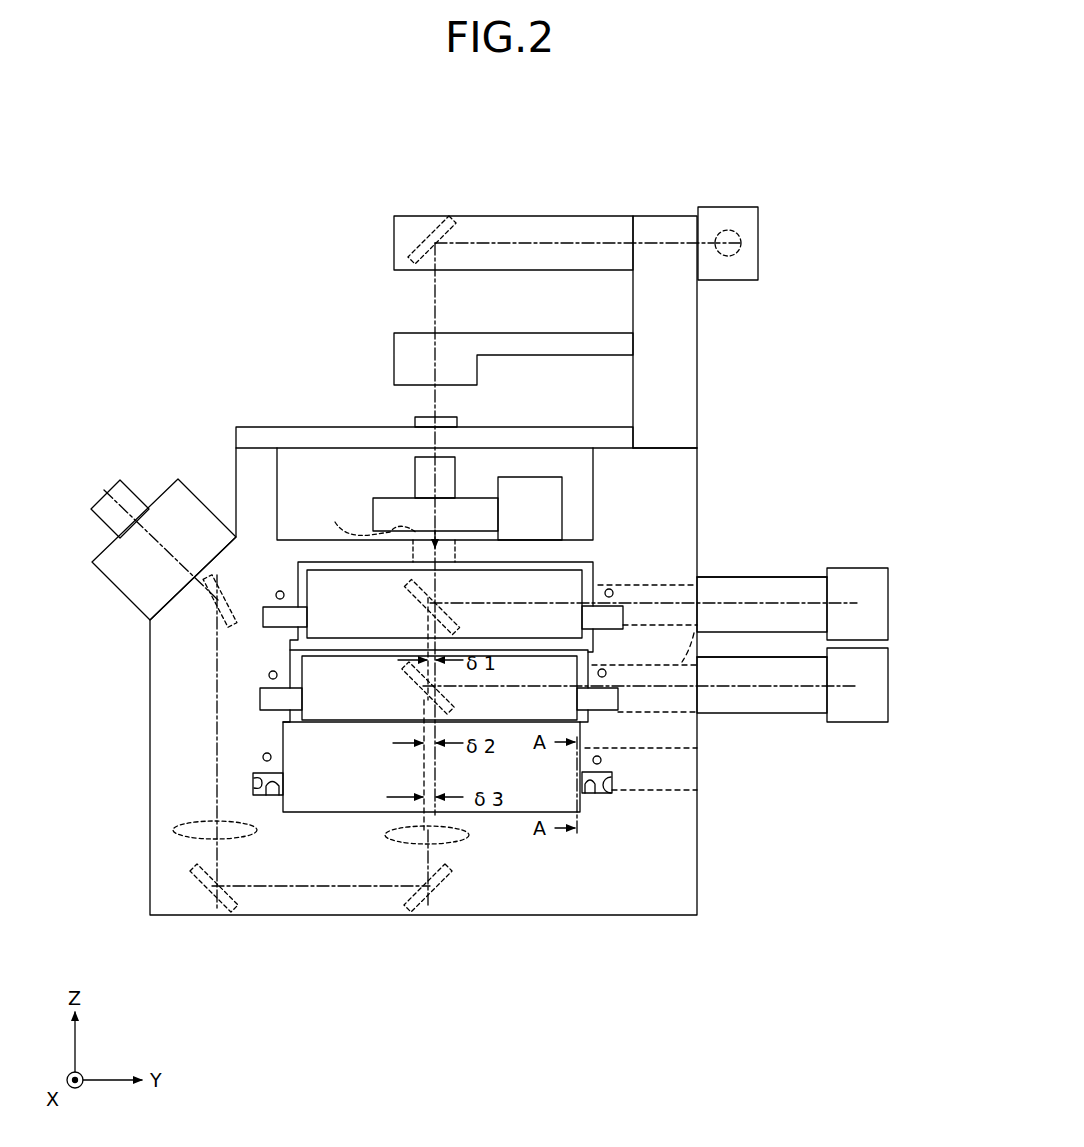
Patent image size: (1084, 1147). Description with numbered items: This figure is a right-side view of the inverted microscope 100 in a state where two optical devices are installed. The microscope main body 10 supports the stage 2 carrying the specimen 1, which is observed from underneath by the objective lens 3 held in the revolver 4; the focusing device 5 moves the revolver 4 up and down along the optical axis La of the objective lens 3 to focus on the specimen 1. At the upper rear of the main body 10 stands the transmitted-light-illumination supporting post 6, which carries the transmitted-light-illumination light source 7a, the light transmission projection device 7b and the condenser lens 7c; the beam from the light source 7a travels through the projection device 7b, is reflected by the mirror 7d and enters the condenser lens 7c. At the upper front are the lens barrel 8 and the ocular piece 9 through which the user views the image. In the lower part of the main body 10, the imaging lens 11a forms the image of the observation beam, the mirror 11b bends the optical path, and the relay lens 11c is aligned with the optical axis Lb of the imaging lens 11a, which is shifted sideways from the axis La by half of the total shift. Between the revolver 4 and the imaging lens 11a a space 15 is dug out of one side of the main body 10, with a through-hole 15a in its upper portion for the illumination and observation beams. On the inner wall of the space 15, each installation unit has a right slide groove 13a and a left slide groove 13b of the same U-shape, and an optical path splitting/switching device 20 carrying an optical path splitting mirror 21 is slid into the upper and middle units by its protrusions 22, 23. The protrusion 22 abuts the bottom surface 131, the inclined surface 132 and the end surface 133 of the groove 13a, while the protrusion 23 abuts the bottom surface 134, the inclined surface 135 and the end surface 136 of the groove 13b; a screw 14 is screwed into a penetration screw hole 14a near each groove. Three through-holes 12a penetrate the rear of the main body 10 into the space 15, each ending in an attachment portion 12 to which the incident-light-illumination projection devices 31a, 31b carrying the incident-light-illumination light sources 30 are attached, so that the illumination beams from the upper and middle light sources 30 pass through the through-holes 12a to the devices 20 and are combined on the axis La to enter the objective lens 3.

The inverted microscope 100 is at (485, 120).
The specimen 1 is at (415, 421).
The stage 2 is at (262, 437).
The objective lens 3 is at (415, 473).
The revolver 4 is at (385, 507).
The focusing device 5 is at (543, 490).
The transmitted-light-illumination supporting post 6 is at (697, 333).
The transmitted-light-illumination light source 7a is at (760, 228).
The light transmission projection device 7b is at (545, 226).
The condenser lens 7c is at (405, 372).
The mirror 7d is at (428, 225).
The lens barrel 8 is at (110, 578).
The ocular piece 9 is at (136, 505).
The microscope main body 10 is at (150, 718).
The imaging lens 11a is at (387, 835).
The mirror 11b is at (217, 578).
The relay lens 11c is at (173, 830).
The attachment portion 12 is at (698, 590).
The through-hole 12a is at (682, 583).
The slide groove 13a is at (625, 604).
The slide groove 13b is at (273, 622).
The screw 14 is at (281, 591).
The penetration screw hole 14a is at (268, 753).
The space 15 is at (320, 795).
The through-hole 15a is at (355, 518).
The optical path splitting/switching device 20 is at (569, 583).
The optical path splitting mirror 21 is at (408, 595).
The protrusion 22 is at (590, 618).
The protrusion 23 is at (268, 621).
The incident-light-illumination light source 30 is at (889, 585).
The incident-light-illumination projection device 31a is at (760, 583).
The incident-light-illumination projection device 31b is at (767, 668).
The bottom surface 131 is at (593, 794).
The inclined surface 132 is at (606, 782).
The end surface 133 is at (612, 793).
The bottom surface 134 is at (268, 796).
The inclined surface 135 is at (253, 777).
The end surface 136 is at (255, 786).
The optical axis of the objective lens La is at (457, 465).
The optical axis of the imaging lens Lb is at (428, 867).